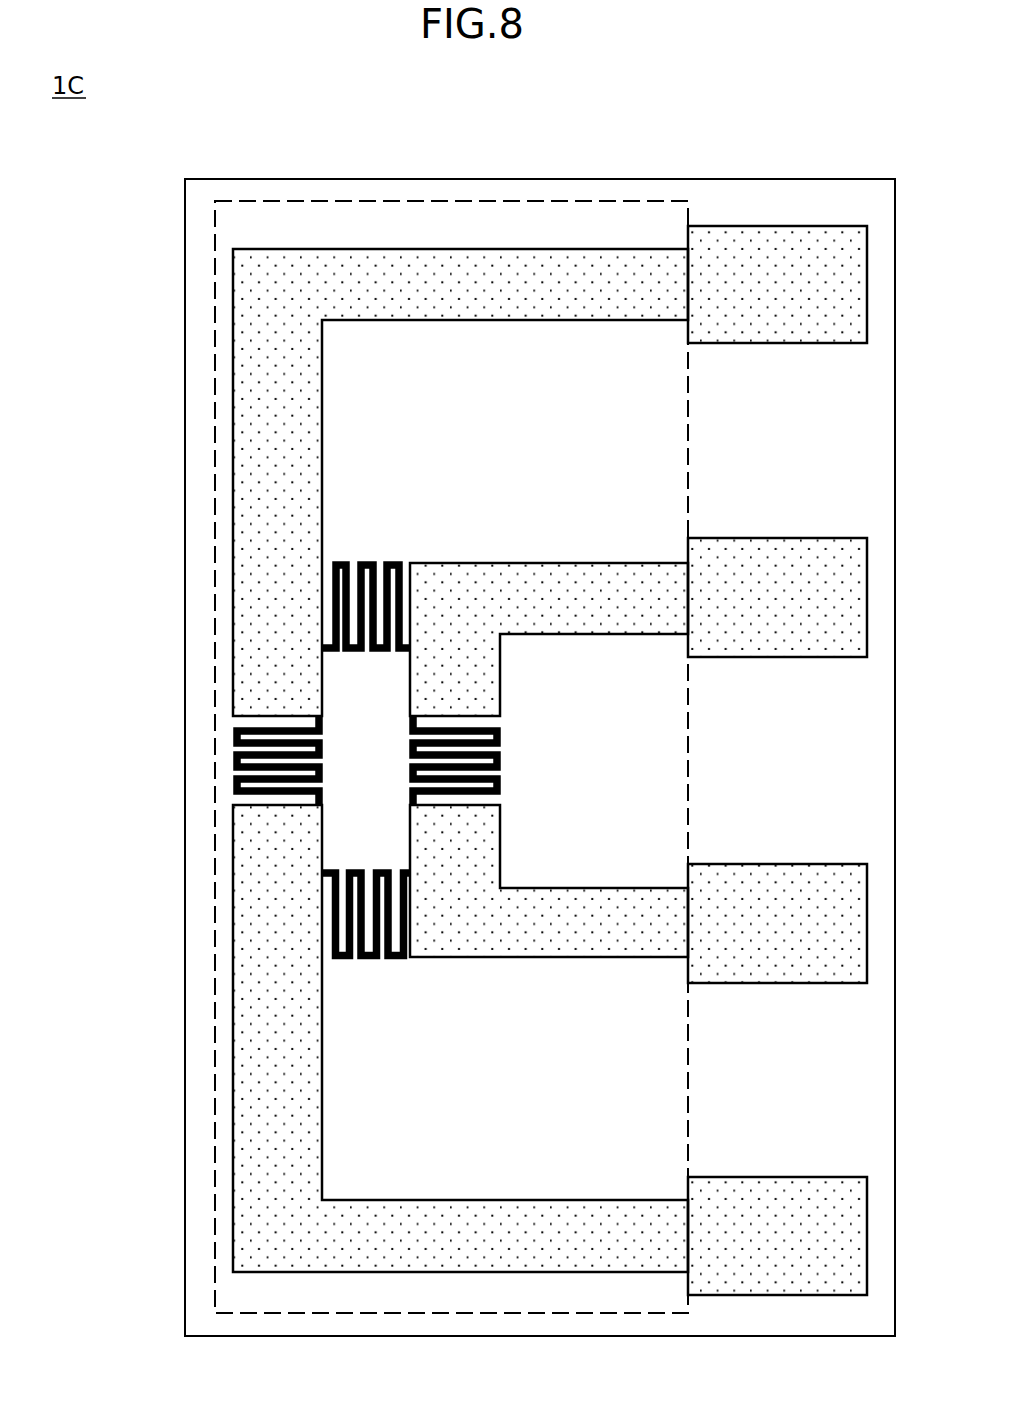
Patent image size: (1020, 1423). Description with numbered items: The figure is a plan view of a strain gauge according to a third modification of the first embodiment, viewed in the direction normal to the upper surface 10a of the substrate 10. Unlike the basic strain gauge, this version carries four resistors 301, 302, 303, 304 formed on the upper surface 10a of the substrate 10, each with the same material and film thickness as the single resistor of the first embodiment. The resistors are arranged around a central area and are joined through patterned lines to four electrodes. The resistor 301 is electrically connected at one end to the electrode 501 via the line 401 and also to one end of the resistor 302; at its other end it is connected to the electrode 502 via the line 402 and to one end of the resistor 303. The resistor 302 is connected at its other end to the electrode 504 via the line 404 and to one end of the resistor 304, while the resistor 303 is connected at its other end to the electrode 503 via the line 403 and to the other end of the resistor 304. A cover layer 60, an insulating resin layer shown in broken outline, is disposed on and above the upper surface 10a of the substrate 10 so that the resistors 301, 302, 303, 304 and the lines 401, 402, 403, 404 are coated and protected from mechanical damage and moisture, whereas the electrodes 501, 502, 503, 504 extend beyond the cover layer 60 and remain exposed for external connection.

The substrate 10 is at (397, 178).
The upper surface of the substrate 10a is at (516, 193).
The cover layer 60 is at (633, 200).
The resistor 301 is at (366, 561).
The resistor 302 is at (216, 760).
The resistor 303 is at (517, 760).
The resistor 304 is at (366, 966).
The line 401 is at (460, 482).
The line 402 is at (549, 595).
The line 403 is at (549, 878).
The line 404 is at (460, 1038).
The electrode 501 is at (777, 323).
The electrode 502 is at (777, 565).
The electrode 503 is at (777, 891).
The electrode 504 is at (777, 1203).